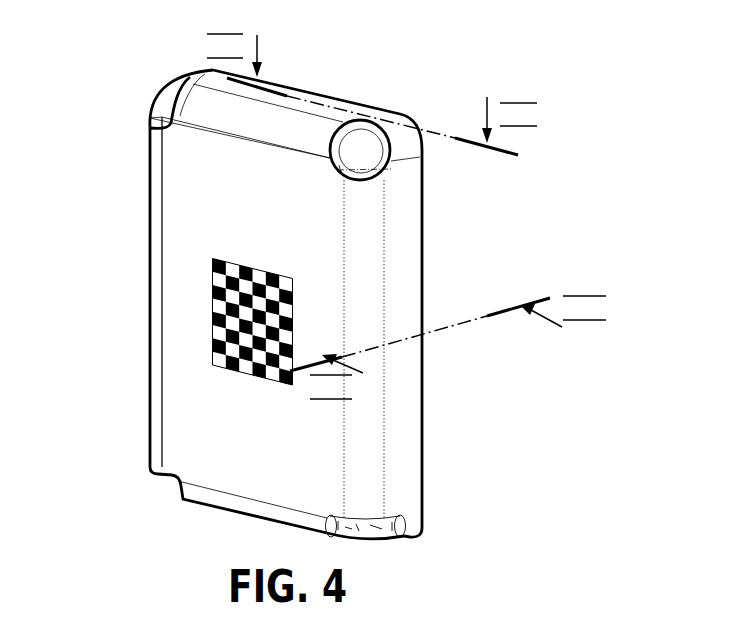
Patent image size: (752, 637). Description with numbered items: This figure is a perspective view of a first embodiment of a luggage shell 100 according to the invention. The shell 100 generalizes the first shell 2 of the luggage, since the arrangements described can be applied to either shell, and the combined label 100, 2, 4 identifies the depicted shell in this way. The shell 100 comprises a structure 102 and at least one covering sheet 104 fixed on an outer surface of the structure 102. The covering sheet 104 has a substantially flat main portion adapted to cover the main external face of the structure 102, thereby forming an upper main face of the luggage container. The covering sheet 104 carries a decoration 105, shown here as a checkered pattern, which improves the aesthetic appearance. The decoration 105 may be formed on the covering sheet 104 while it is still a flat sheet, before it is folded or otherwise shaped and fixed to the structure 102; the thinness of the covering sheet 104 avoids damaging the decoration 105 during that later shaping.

The luggage shell 100 is at (329, 303).
The first shell 2 is at (329, 303).
The housing 4 is at (329, 303).
The structure 102 is at (367, 530).
The covering sheet 104 is at (200, 347).
The decoration 105 is at (196, 300).